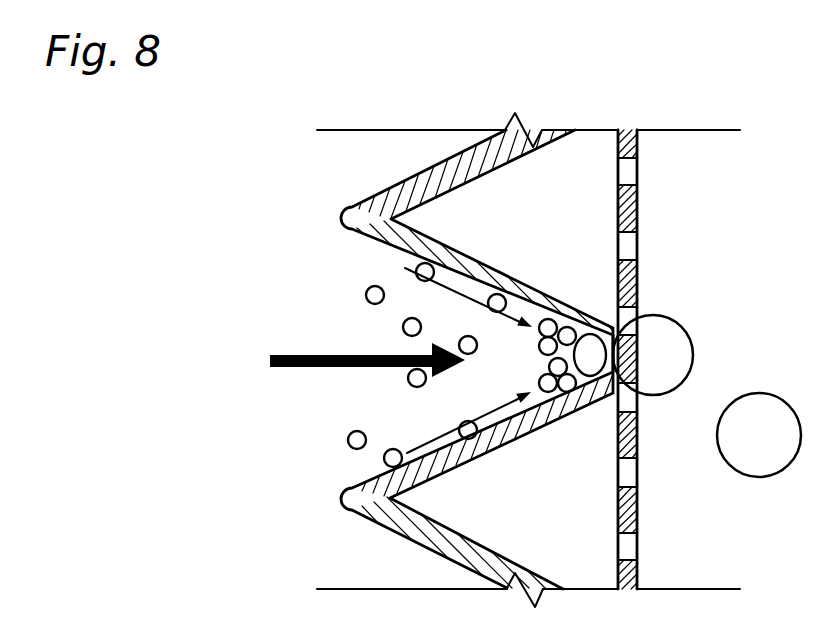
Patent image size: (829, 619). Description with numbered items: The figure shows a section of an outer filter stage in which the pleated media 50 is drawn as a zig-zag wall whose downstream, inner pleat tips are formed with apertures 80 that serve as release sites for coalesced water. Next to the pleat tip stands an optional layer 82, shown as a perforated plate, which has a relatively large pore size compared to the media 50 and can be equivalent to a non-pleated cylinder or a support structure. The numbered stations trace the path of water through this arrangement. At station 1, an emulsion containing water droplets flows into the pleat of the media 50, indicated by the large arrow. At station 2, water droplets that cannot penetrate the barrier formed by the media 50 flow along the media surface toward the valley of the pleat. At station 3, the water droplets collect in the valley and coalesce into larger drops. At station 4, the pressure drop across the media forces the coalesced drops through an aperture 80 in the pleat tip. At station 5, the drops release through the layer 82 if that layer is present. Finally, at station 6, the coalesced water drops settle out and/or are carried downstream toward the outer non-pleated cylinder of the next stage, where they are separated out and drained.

The pleated media 50 is at (392, 188).
The optional layer 82 is at (638, 213).
The aperture 80 is at (638, 333).
The emulsion inflow 1 is at (367, 378).
The droplet flow along media surface 2 is at (457, 429).
The droplet collection and coalescence 3 is at (553, 355).
The drop passage through aperture 4 is at (652, 362).
The drop release through layer 5 is at (657, 417).
The drop settling 6 is at (759, 460).